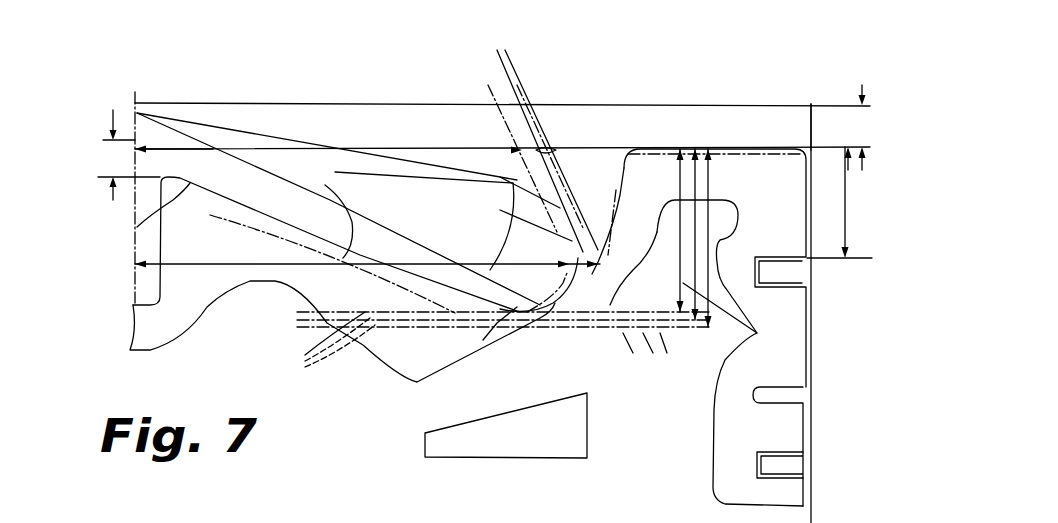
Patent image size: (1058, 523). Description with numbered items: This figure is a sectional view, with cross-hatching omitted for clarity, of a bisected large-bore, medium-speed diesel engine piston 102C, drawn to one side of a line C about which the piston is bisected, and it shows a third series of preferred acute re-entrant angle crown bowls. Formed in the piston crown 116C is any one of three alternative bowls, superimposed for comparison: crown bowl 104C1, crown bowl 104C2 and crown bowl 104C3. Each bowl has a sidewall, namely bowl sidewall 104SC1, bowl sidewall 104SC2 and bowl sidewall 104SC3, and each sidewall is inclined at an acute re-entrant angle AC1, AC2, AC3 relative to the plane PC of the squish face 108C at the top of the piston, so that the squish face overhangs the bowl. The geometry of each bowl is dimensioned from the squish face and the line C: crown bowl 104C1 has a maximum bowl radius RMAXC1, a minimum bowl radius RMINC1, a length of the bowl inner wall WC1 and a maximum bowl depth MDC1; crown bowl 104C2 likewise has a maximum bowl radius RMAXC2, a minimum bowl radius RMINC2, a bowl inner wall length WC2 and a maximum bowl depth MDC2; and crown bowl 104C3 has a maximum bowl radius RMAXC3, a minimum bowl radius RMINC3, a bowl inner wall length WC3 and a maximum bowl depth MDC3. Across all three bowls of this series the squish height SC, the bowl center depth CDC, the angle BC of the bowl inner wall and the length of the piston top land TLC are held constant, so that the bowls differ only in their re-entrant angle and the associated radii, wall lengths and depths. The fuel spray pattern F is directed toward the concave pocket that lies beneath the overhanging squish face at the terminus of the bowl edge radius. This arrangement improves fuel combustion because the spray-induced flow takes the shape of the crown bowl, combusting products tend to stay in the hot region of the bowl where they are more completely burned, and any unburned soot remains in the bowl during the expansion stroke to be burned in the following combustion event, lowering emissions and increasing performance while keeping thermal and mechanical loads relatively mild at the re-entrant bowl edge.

The piston 102C is at (818, 250).
The squish face 108C is at (703, 147).
The piston crown 116C is at (751, 130).
The crown bowl 104C1 is at (285, 126).
The crown bowl 104C2 is at (381, 136).
The crown bowl 104C3 is at (445, 136).
The bowl sidewall 104SC1 is at (510, 185).
The bowl sidewall 104SC2 is at (512, 213).
The bowl sidewall 104SC3 is at (550, 152).
The fuel spray pattern F is at (336, 176).
The center axis C is at (133, 272).
The bowl center depth CDC is at (105, 164).
The minimum bowl radius RMINC1 is at (213, 150).
The minimum bowl radius RMINC2 is at (498, 85).
The minimum bowl radius RMINC3 is at (543, 147).
The maximum bowl radius RMAXC1 is at (303, 253).
The maximum bowl radius RMAXC2 is at (575, 277).
The maximum bowl radius RMAXC3 is at (598, 255).
The angle of the bowl inner wall BC is at (170, 210).
The length of the bowl inner wall WC1 is at (316, 209).
The length of the bowl inner wall WC2 is at (520, 330).
The length of the bowl inner wall WC3 is at (547, 330).
The acute re-entrant angle AC1 is at (577, 315).
The acute re-entrant angle AC2 is at (606, 292).
The acute re-entrant angle AC3 is at (625, 305).
The maximum bowl depth MDC1 is at (757, 333).
The maximum bowl depth MDC2 is at (720, 240).
The maximum bowl depth MDC3 is at (712, 178).
The squish height SC is at (857, 127).
The length of the piston top land TLC is at (845, 195).
The plane of the squish face PC is at (326, 345).